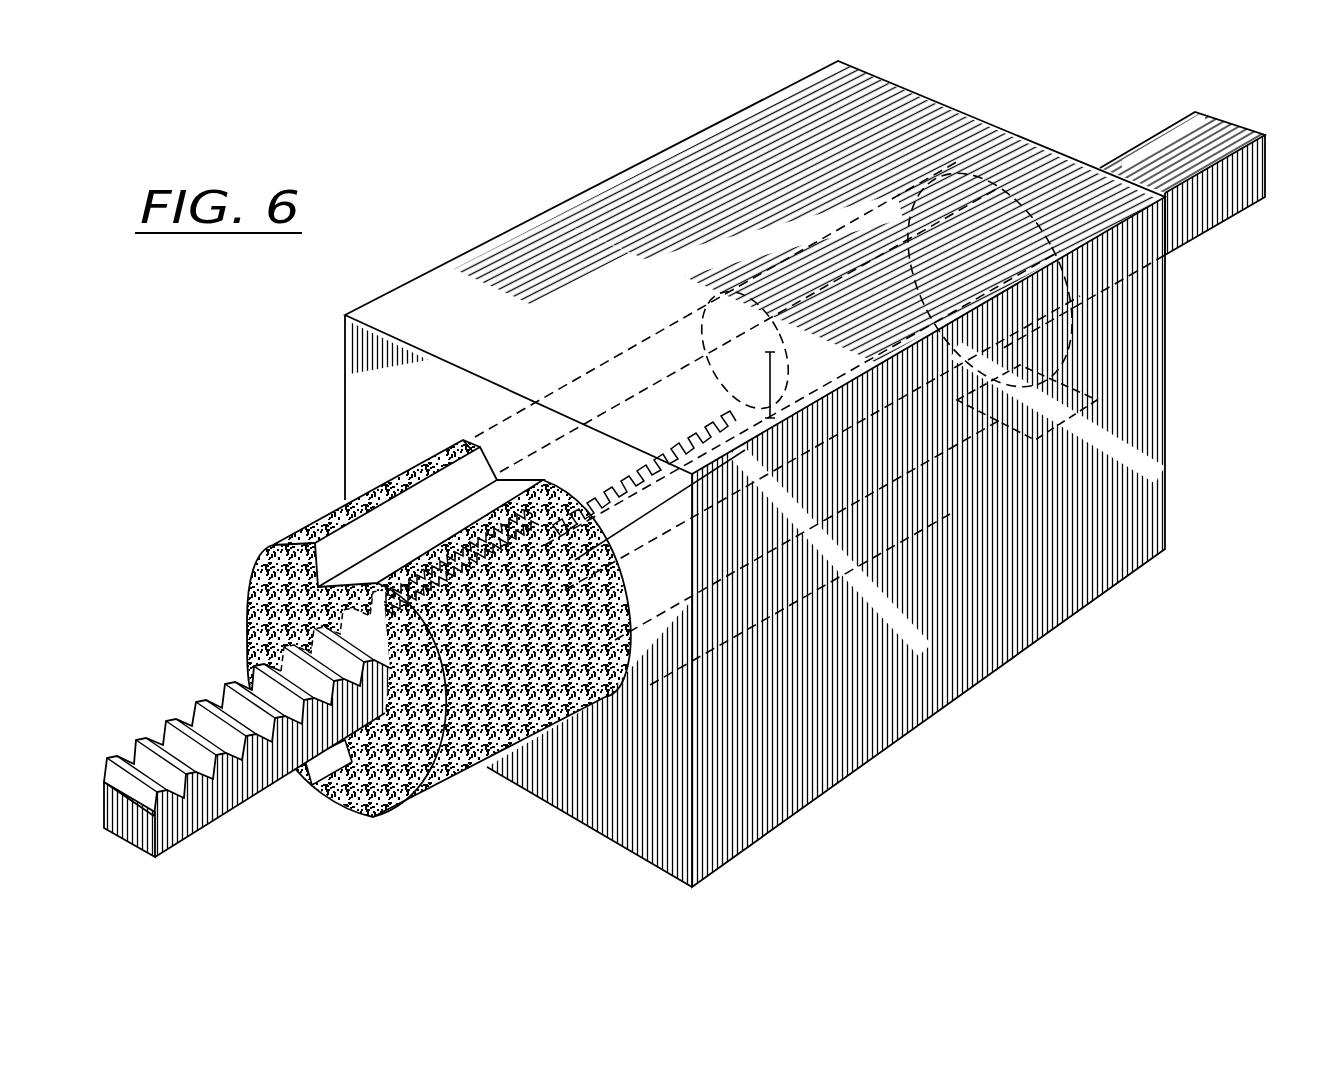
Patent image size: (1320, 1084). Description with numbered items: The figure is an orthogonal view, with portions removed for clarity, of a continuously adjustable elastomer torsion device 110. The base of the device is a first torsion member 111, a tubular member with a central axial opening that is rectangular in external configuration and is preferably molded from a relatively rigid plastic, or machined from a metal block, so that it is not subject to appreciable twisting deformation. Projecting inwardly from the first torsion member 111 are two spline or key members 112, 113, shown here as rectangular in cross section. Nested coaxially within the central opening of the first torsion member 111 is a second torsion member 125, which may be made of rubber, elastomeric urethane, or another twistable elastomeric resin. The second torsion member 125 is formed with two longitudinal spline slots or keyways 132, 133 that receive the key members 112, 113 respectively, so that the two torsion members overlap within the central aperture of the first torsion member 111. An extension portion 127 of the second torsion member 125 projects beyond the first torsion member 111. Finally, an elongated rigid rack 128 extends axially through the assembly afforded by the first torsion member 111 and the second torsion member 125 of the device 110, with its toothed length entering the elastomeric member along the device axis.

The continuously adjustable torsion device 110 is at (318, 503).
The first torsion member 111 is at (1062, 548).
The key member 112 is at (515, 482).
The key member 113 is at (484, 770).
The second torsion member 125 is at (290, 597).
The extension portion 127 is at (606, 700).
The rack 128 is at (220, 705).
The spline slot 132 is at (370, 500).
The spline slot 133 is at (350, 784).